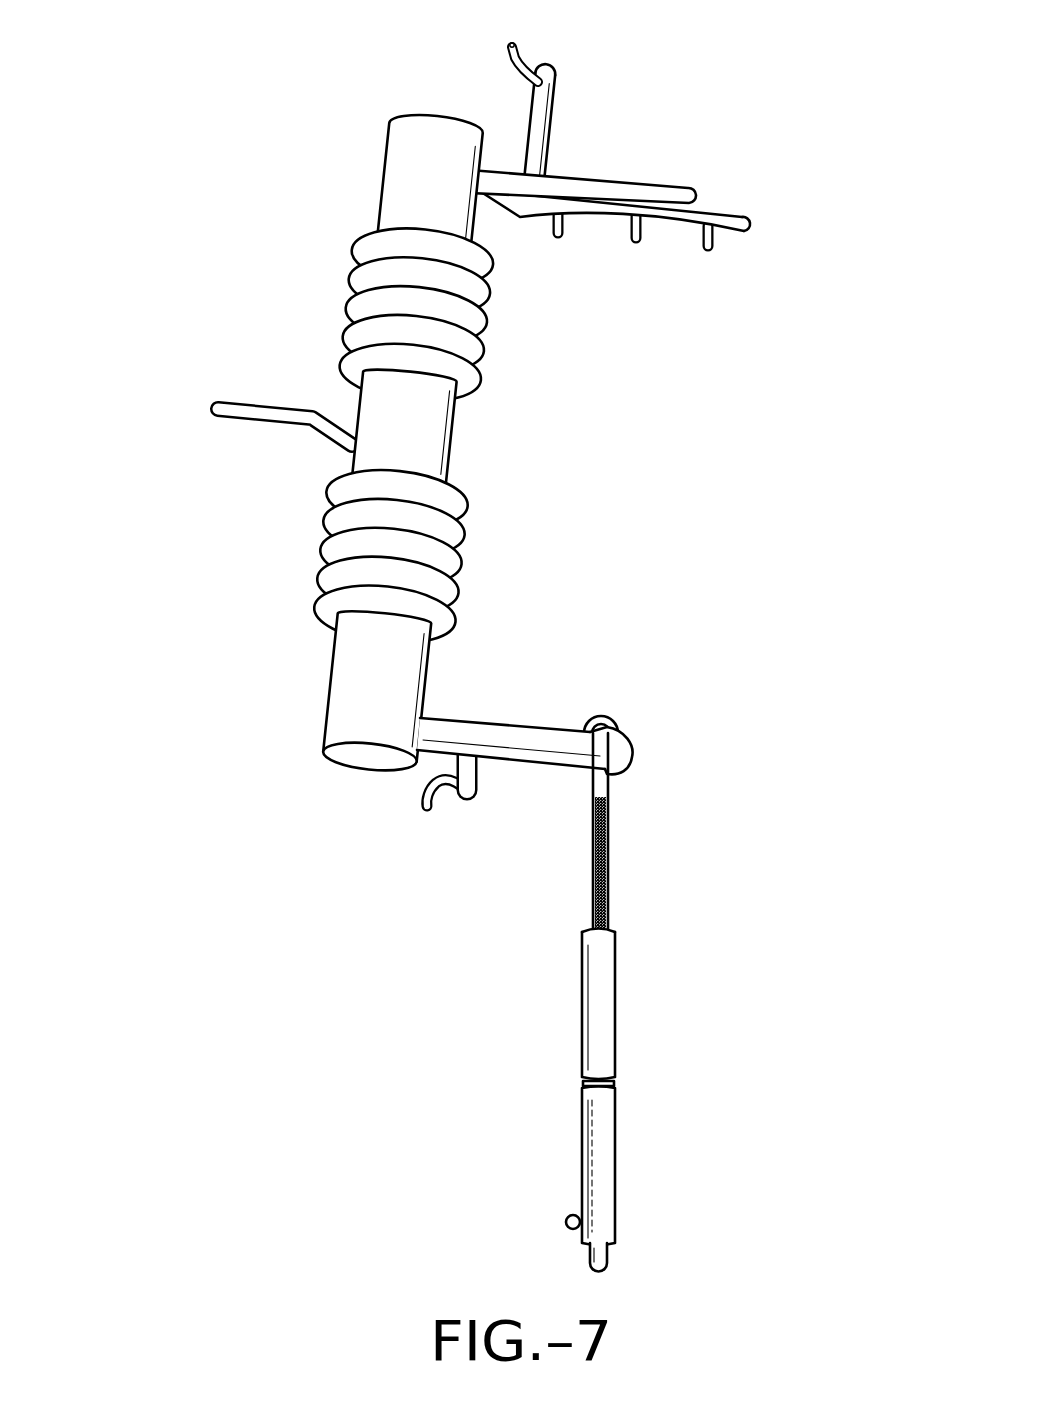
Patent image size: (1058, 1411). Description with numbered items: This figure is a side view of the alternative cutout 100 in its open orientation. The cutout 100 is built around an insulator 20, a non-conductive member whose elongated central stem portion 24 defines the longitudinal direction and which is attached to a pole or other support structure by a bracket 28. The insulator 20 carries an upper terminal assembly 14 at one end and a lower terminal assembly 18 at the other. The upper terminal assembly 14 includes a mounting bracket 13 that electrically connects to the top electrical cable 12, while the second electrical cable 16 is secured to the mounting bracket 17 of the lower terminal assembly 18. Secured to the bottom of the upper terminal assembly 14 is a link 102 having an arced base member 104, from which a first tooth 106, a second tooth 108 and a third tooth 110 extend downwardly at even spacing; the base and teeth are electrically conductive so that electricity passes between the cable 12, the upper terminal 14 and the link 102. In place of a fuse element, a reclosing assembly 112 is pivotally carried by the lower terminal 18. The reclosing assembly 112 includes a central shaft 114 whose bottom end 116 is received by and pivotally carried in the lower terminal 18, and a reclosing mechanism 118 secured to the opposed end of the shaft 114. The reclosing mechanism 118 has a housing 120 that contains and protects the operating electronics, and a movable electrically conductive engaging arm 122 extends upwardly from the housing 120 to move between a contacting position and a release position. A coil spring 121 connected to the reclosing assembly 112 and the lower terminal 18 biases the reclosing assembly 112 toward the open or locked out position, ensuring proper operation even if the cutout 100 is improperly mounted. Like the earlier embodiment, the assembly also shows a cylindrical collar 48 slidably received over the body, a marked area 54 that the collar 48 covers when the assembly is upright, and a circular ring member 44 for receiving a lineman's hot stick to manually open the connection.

The cutout 100 is at (467, 653).
The electrical cable 12 is at (510, 57).
The mounting bracket 13 is at (558, 86).
The upper line terminal assembly 14 is at (611, 170).
The link 102 is at (748, 207).
The arced base member 104 is at (728, 230).
The first tooth 106 is at (560, 238).
The second tooth 108 is at (637, 242).
The third tooth 110 is at (713, 250).
The bracket 28 is at (238, 403).
The central stem portion 24 is at (421, 440).
The insulator 20 is at (474, 468).
The lower line terminal assembly 18 is at (518, 716).
The coil spring 121 is at (608, 706).
The bottom end 116 is at (628, 762).
The electrical cable 16 is at (421, 807).
The mounting bracket 17 is at (475, 786).
The marked area 54 is at (590, 858).
The central shaft 114 is at (590, 923).
The reclosing assembly 112 is at (635, 1008).
The cylindrical collar 48 is at (604, 1007).
The reclosing mechanism 118 is at (640, 1136).
The housing 120 is at (583, 1143).
The circular ring member 44 is at (566, 1220).
The engaging arm 122 is at (603, 1248).